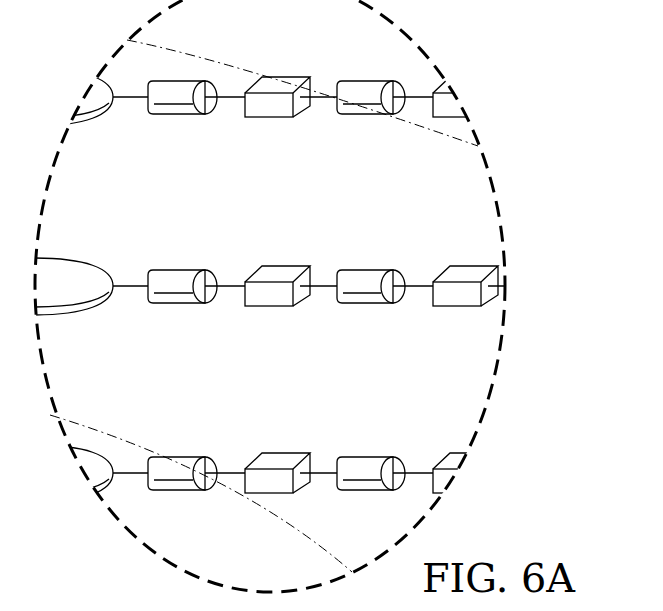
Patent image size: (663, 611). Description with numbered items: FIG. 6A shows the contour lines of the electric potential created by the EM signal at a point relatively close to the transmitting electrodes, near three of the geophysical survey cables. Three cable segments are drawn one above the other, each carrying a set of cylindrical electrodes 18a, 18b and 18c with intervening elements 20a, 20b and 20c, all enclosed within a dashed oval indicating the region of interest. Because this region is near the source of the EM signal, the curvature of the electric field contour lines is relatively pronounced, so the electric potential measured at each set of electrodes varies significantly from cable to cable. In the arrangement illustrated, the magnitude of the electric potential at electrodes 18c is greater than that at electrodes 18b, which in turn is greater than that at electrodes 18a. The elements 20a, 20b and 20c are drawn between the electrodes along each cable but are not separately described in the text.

The electrodes 18a is at (178, 115).
The beam splitter / cube element of first channel 20a is at (270, 117).
The electrodes 18b is at (187, 268).
The beam splitter / cube element of second channel 20b is at (285, 262).
The electrodes 18c is at (193, 492).
The beam splitter / cube element of third channel 20c is at (285, 452).